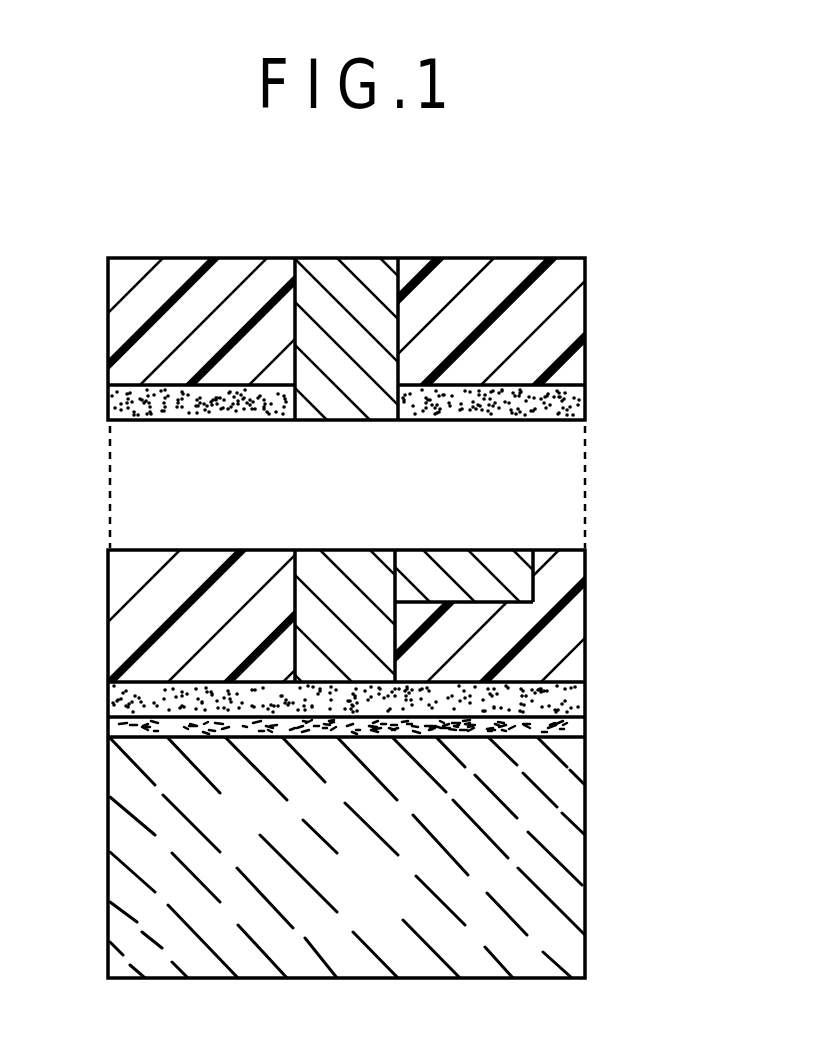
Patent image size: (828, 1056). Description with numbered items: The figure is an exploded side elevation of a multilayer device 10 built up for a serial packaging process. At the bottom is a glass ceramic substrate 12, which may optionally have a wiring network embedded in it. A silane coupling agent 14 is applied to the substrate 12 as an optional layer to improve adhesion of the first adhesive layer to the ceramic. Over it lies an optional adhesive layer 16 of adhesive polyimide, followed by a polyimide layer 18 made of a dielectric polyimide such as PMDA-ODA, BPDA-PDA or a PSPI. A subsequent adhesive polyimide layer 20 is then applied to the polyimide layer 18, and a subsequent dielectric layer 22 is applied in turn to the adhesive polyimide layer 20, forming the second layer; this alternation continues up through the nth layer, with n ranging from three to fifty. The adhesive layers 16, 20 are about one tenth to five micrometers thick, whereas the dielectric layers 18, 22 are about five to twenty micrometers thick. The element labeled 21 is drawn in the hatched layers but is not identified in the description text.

The multilayer device 10 is at (495, 225).
The glass ceramic substrate 12 is at (588, 853).
The silane coupling agent 14 is at (586, 730).
The adhesive layer 16 is at (586, 700).
The polyimide layer 18 is at (586, 628).
The adhesive polyimide layer 20 is at (387, 411).
The grain boundary region 21 is at (378, 270).
The dielectric layer 22 is at (582, 319).